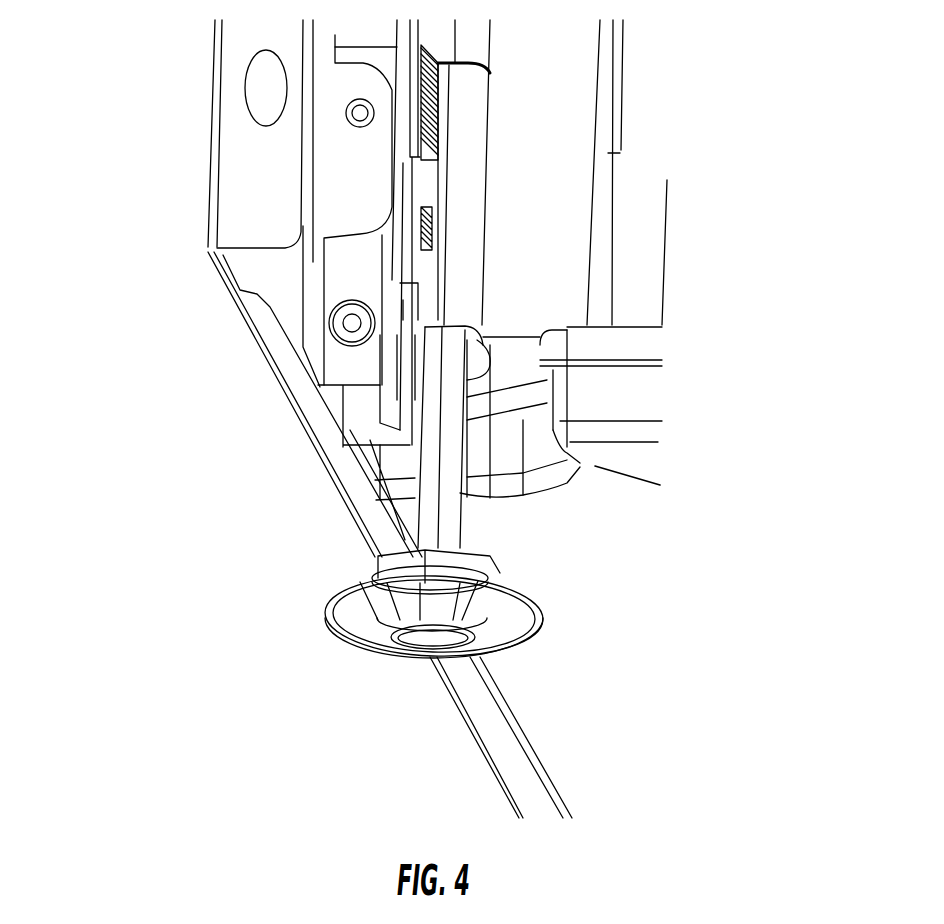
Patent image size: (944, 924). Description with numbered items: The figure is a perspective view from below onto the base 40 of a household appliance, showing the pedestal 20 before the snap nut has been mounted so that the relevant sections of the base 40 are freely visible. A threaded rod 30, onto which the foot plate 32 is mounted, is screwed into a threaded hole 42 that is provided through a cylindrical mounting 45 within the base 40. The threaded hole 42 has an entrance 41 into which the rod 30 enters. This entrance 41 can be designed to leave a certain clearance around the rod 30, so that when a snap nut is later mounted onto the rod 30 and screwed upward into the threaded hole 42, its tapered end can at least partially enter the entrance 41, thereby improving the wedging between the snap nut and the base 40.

The pedestal 20 is at (585, 633).
The threaded rod 30 is at (443, 522).
The foot plate 32 is at (407, 602).
The base 40 is at (234, 398).
The entrance 41 is at (430, 325).
The threaded hole 42 is at (470, 212).
The cylindrical mounting 45 is at (467, 132).